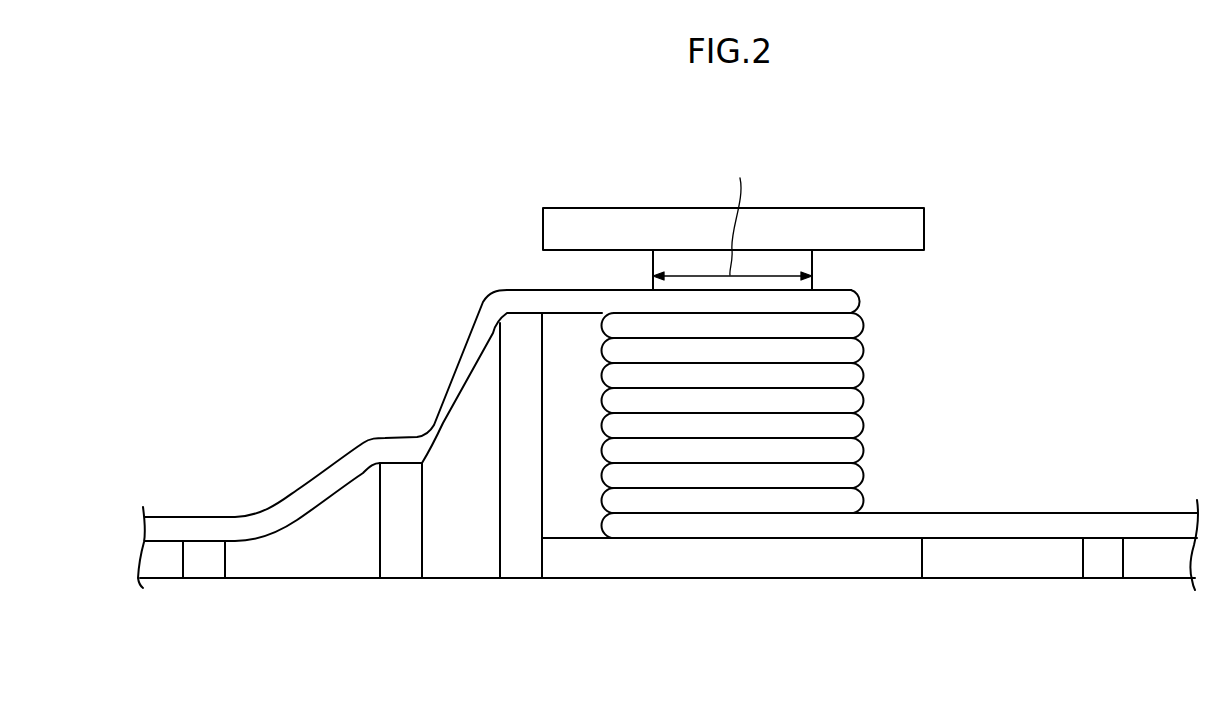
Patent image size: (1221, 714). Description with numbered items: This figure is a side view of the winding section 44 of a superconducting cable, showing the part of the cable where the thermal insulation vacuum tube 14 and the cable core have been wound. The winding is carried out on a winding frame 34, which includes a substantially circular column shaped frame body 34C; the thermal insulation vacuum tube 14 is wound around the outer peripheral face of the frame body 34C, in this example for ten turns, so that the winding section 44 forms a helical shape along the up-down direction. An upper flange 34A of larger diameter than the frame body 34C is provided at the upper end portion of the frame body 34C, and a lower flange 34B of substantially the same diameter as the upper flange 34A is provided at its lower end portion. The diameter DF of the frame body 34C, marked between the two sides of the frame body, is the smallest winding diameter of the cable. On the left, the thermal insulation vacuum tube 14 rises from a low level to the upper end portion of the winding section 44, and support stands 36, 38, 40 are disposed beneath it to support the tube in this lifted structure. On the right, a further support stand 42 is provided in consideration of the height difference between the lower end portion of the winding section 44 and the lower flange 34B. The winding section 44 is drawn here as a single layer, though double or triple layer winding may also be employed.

The thermal insulation vacuum tube 14 is at (207, 517).
The winding frame 34 is at (781, 389).
The upper flange 34A is at (924, 232).
The lower flange 34B is at (924, 562).
The frame body 34C is at (813, 258).
The support stand 36 is at (227, 562).
The support stand 38 is at (424, 564).
The support stand 40 is at (545, 518).
The support stand 42 is at (1126, 562).
The winding section 44 is at (880, 390).